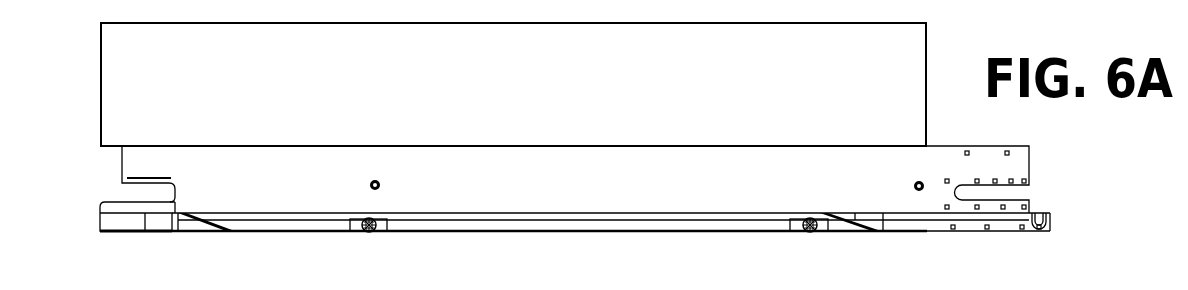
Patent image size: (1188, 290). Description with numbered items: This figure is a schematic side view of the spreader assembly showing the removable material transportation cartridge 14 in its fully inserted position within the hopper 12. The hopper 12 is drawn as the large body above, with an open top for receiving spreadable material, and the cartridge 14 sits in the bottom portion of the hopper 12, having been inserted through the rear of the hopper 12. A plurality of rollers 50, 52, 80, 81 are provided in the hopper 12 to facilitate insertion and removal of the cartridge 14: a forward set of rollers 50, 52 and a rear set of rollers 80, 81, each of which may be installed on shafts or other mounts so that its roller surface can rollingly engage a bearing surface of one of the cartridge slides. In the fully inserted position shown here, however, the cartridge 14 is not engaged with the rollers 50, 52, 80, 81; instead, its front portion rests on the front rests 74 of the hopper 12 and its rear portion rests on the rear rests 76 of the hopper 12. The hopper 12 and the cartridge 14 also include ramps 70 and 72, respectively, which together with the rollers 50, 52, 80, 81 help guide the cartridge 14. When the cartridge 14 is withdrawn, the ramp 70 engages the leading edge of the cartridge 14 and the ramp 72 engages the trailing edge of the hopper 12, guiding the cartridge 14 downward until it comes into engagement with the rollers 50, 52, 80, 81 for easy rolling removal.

The hopper 12 is at (517, 110).
The removable material transportation cartridge 14 is at (543, 192).
The roller 50 is at (388, 254).
The roller 52 is at (373, 240).
The ramp 70 is at (210, 232).
The ramp 72 is at (873, 238).
The front rest 74 is at (145, 226).
The rear rest 76 is at (952, 238).
The roller 80 is at (786, 250).
The roller 81 is at (811, 240).